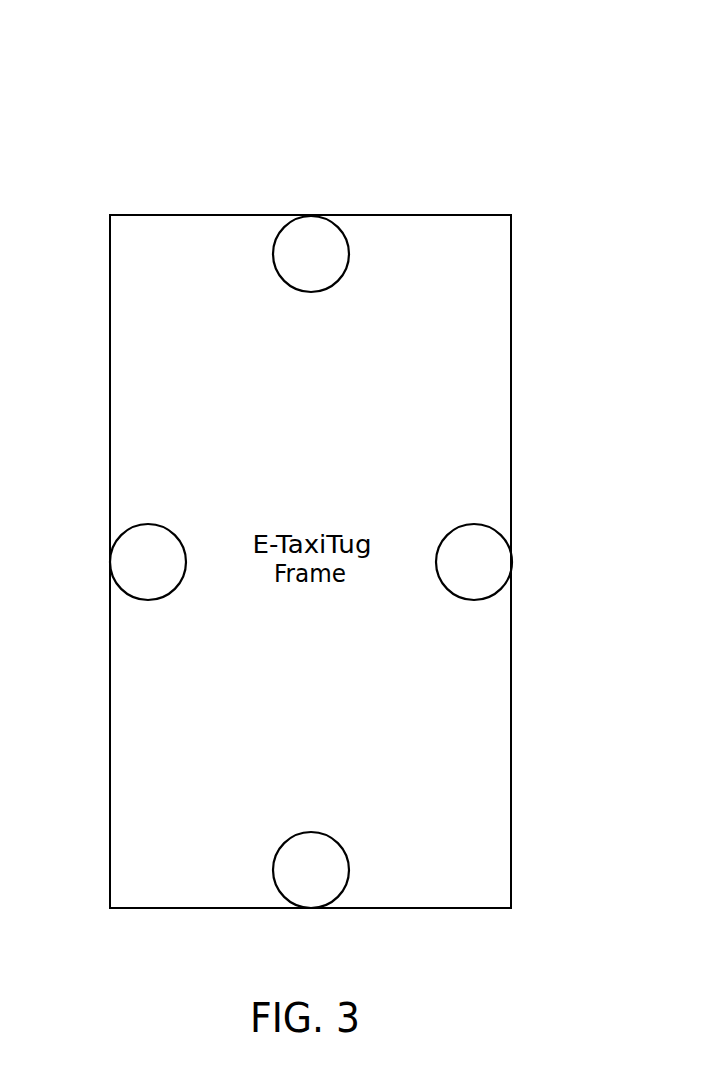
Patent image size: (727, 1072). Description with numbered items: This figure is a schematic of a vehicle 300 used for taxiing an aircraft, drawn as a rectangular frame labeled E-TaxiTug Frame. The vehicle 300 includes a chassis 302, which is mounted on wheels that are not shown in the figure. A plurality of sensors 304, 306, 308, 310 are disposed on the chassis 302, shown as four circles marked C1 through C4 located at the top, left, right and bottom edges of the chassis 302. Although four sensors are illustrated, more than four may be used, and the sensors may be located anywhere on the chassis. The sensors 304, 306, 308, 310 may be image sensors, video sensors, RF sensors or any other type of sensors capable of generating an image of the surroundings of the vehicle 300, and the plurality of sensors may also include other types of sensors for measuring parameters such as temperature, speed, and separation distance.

The vehicle 300 is at (538, 97).
The chassis 302 is at (512, 305).
The sensor 304 is at (311, 226).
The sensor 306 is at (114, 565).
The sensor 308 is at (500, 567).
The sensor 310 is at (311, 845).